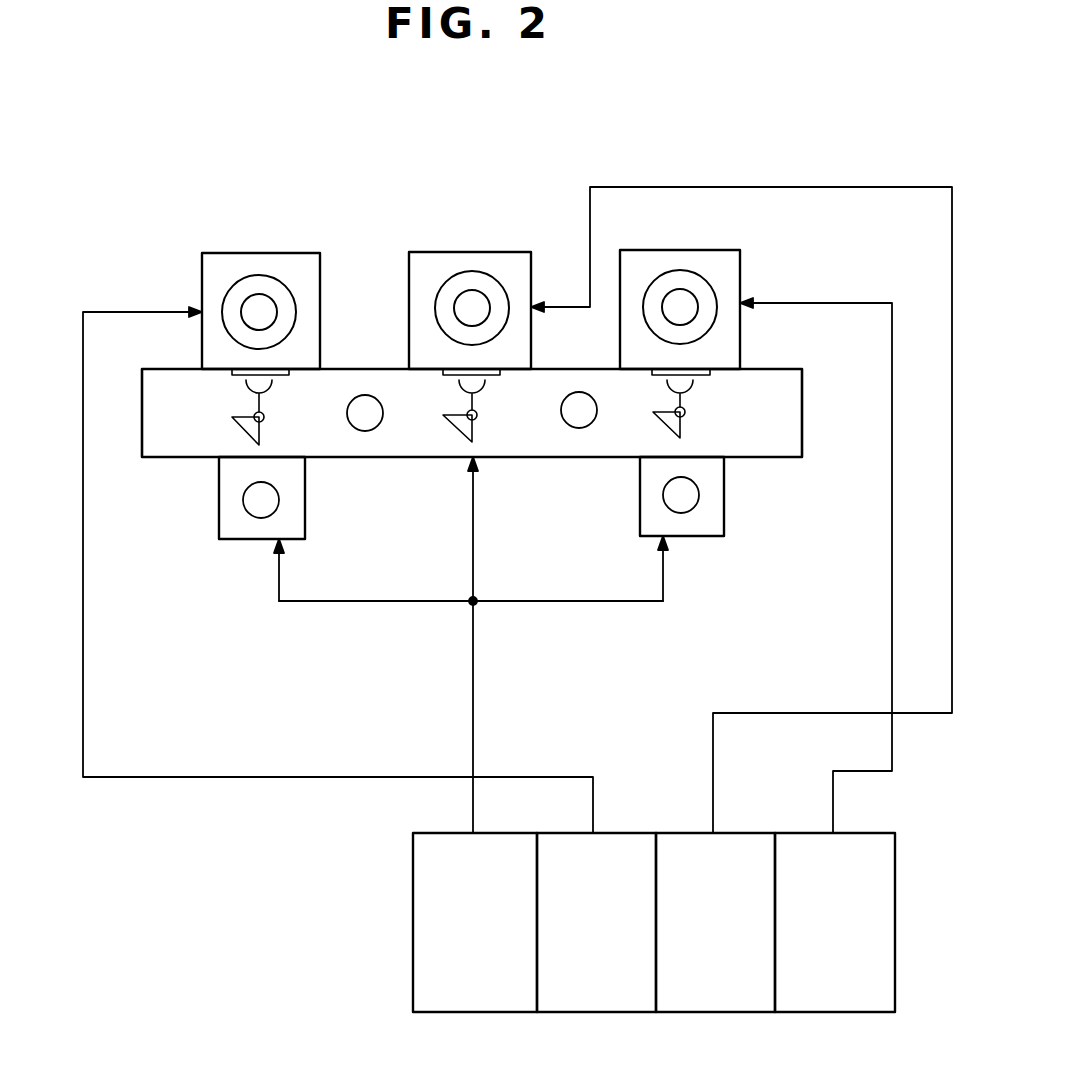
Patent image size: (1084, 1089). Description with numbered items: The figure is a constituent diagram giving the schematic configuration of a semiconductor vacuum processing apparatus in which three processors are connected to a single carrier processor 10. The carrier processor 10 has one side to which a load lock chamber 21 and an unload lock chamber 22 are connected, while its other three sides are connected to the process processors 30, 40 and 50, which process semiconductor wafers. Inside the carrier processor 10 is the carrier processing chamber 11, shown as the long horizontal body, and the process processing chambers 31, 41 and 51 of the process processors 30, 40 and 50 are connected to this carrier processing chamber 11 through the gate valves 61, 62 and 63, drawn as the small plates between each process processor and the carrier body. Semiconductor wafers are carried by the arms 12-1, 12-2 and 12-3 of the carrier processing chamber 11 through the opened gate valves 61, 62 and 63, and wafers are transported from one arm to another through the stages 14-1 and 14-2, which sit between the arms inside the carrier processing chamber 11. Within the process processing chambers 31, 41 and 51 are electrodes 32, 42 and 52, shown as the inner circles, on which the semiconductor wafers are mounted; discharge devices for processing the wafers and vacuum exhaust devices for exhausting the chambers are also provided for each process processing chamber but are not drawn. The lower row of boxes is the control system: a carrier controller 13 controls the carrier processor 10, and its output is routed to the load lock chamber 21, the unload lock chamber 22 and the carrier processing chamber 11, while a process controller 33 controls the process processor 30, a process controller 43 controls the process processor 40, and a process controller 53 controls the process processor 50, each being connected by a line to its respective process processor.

The carrier processor 10 is at (485, 471).
The carrier processing chamber 11 is at (804, 372).
The arm 12-1 is at (243, 420).
The arm 12-2 is at (443, 417).
The arm 12-3 is at (653, 413).
The carrier controller 13 is at (510, 833).
The stage 14-1 is at (365, 431).
The stage 14-2 is at (579, 428).
The load lock chamber 21 is at (261, 518).
The unload lock chamber 22 is at (681, 513).
The process processor 30 is at (213, 262).
The process processing chamber 31 is at (263, 283).
The electrode 32 is at (267, 303).
The process controller 33 is at (635, 833).
The process processor 40 is at (430, 257).
The process processing chamber 41 is at (473, 280).
The electrode 42 is at (476, 296).
The process controller 43 is at (750, 833).
The process processor 50 is at (640, 256).
The process processing chamber 51 is at (688, 275).
The electrode 52 is at (697, 300).
The process controller 53 is at (878, 833).
The gate valve 61 is at (285, 369).
The gate valve 62 is at (500, 369).
The gate valve 63 is at (710, 369).